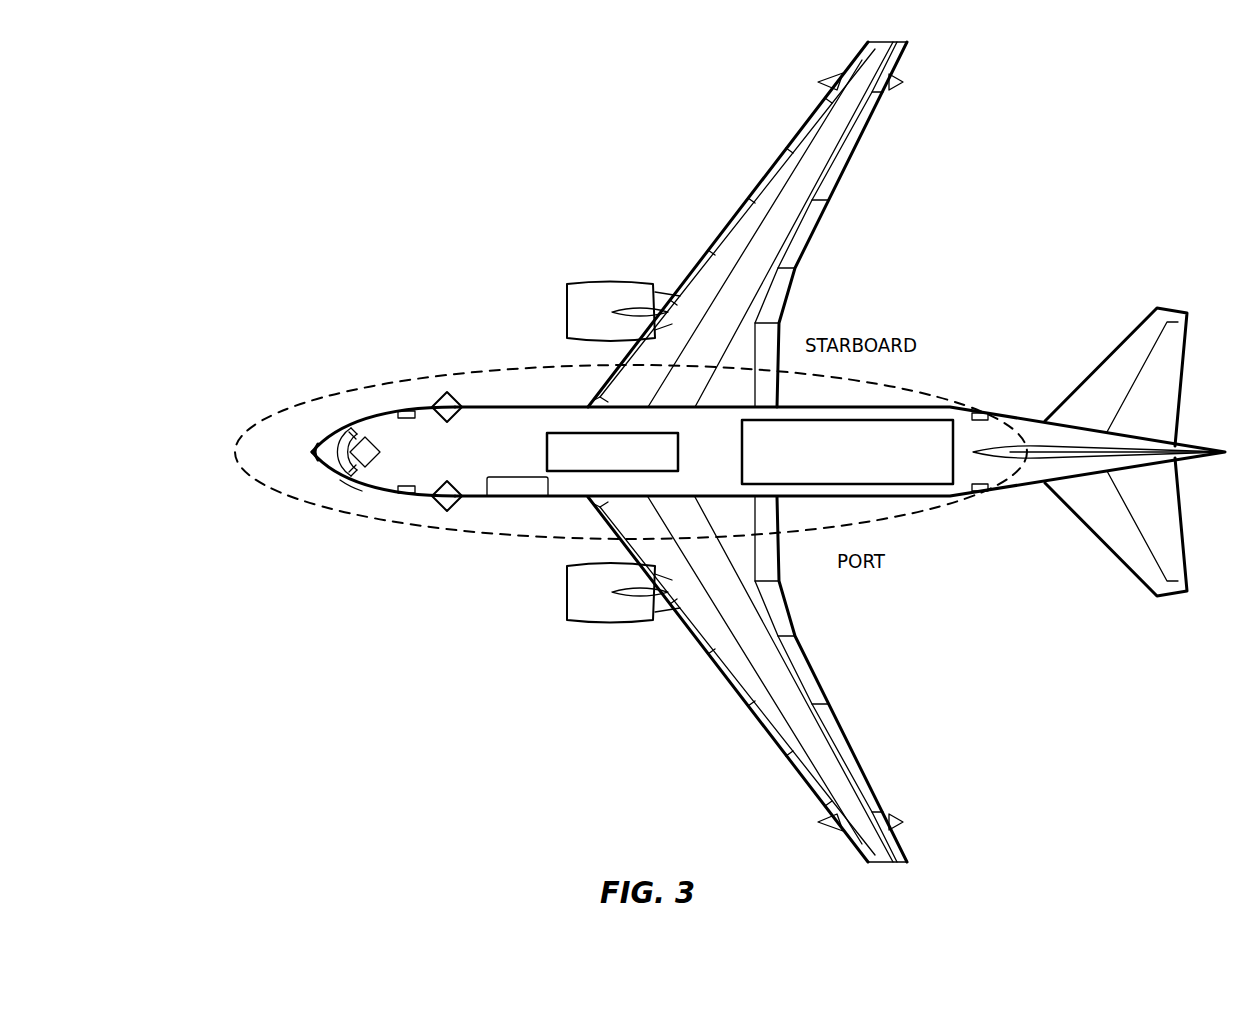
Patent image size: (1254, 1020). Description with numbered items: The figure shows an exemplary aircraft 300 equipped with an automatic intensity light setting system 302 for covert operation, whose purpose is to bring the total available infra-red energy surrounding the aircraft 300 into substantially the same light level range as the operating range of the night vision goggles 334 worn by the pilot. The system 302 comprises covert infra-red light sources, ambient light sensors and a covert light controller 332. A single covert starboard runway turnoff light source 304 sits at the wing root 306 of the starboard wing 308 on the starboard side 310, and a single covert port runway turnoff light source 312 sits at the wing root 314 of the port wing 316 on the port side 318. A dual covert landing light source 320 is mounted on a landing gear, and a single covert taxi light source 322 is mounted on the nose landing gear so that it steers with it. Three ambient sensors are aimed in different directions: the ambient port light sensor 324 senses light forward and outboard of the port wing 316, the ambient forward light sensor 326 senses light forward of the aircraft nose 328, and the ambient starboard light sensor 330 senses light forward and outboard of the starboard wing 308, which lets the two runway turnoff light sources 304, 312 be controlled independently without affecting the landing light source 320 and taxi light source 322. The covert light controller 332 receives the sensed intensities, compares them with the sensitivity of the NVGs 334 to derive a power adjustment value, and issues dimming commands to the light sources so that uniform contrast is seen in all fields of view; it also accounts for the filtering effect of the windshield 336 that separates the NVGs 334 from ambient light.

The aircraft 300 is at (470, 138).
The automatic intensity light setting system 302 is at (462, 522).
The single covert starboard runway turnoff light source 304 is at (580, 390).
The wing root 306 is at (590, 412).
The starboard wing 308 is at (727, 306).
The starboard side 310 is at (842, 300).
The single covert port runway turnoff light source 312 is at (580, 514).
The wing root 314 is at (590, 492).
The port wing 316 is at (727, 598).
The port side 318 is at (826, 604).
The dual covert landing light source 320 is at (312, 441).
The single covert taxi light source 322 is at (359, 490).
The ambient port light sensor 324 is at (442, 503).
The ambient forward light sensor 326 is at (310, 452).
The aircraft nose 328 is at (325, 470).
The ambient starboard light sensor 330 is at (442, 400).
The covert light controller 332 is at (926, 418).
The night vision goggles 334 is at (547, 458).
The windshield 336 is at (334, 440).